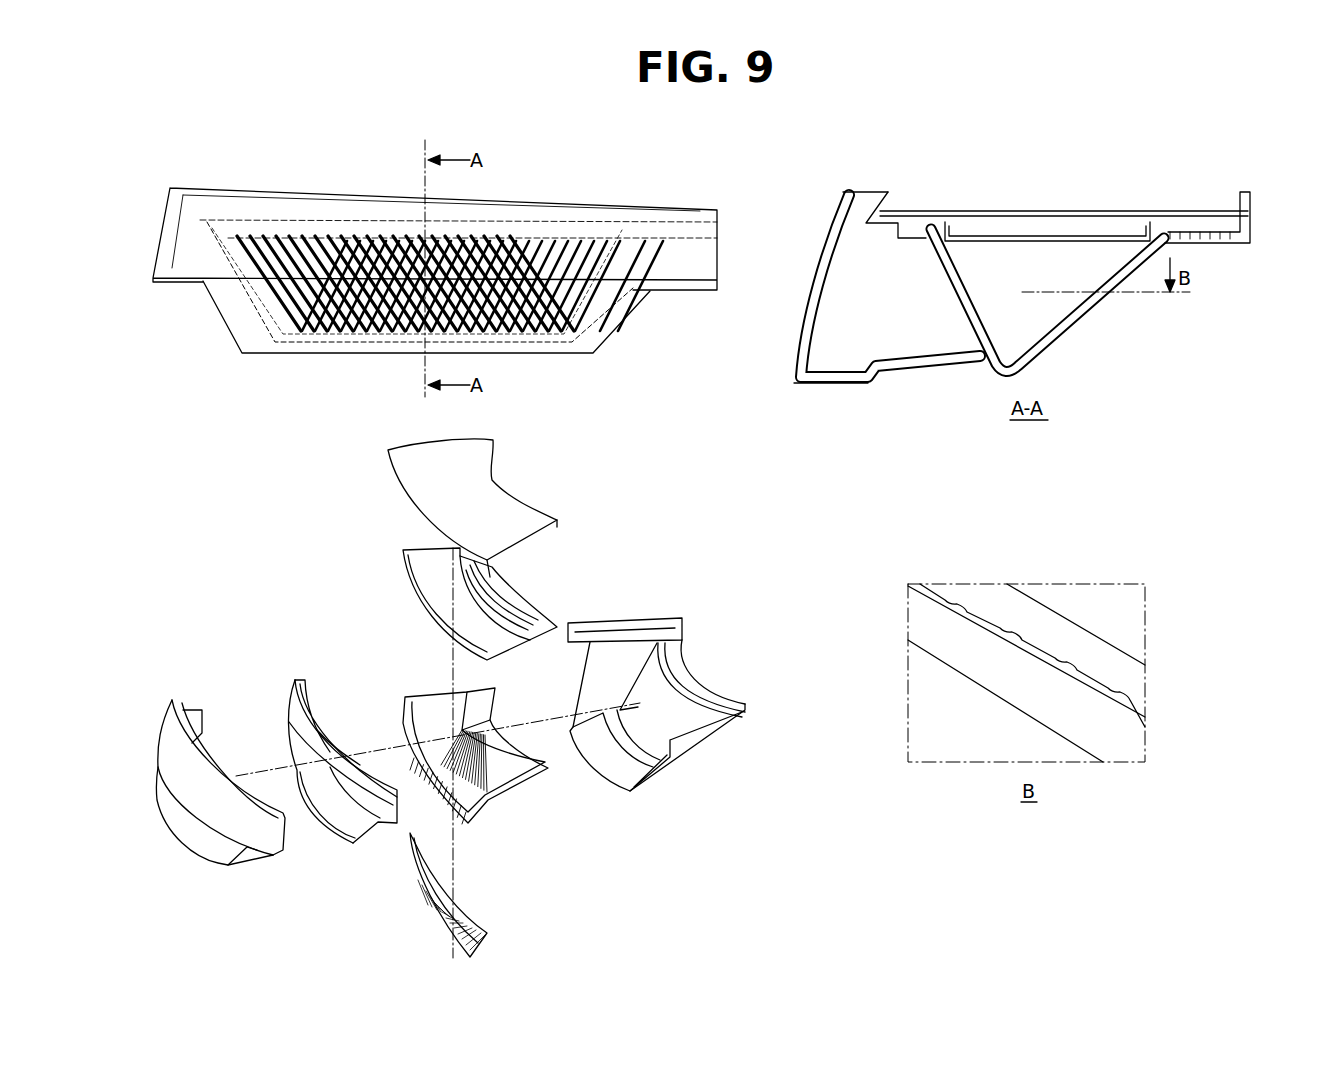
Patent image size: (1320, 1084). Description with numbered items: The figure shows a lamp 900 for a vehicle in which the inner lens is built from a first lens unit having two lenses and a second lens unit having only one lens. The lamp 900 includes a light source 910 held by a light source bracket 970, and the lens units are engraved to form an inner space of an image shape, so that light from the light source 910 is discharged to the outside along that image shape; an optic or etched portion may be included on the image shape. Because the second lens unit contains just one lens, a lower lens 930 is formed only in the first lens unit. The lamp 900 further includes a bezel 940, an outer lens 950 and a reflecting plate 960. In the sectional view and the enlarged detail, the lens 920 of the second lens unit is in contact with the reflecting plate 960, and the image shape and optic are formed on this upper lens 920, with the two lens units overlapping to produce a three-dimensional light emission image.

The lamp 900 is at (211, 138).
The light source 910 is at (528, 498).
The lens 920 is at (510, 797).
The lower lens 930 is at (410, 853).
The bezel 940 is at (305, 680).
The outer lens 950 is at (195, 712).
The reflecting plate 960 is at (658, 618).
The light source bracket 970 is at (537, 613).